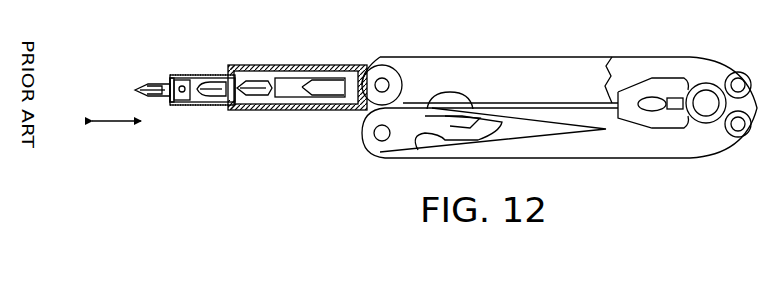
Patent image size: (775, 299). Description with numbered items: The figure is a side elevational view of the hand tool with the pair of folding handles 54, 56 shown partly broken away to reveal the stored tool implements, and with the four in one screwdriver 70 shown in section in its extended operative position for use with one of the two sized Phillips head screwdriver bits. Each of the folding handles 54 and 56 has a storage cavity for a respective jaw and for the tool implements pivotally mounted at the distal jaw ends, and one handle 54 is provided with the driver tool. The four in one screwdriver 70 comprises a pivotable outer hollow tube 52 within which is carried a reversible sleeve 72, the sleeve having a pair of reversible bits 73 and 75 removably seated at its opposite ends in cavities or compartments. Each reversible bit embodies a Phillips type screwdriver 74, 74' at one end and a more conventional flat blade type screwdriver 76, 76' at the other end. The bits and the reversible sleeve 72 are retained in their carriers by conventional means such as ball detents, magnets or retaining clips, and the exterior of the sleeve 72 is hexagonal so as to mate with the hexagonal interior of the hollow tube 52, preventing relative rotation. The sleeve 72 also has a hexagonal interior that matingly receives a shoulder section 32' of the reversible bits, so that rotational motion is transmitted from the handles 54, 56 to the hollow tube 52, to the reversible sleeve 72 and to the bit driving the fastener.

The outer hollow tube 52 is at (328, 65).
The folding handle 54 is at (563, 89).
The folding handle 56 is at (628, 144).
The 4 in 1 screwdriver 70 is at (240, 112).
The reversible sleeve 72 is at (188, 74).
The reversible bit 73 is at (162, 72).
The Phillips type screwdriver 74 is at (109, 81).
The Phillips type screwdriver 74' is at (280, 56).
The reversible bit 75 is at (275, 112).
The flat blade type screwdriver 76 is at (192, 129).
The flat blade type screwdriver 76' is at (325, 128).
The shoulder section 32' is at (121, 141).